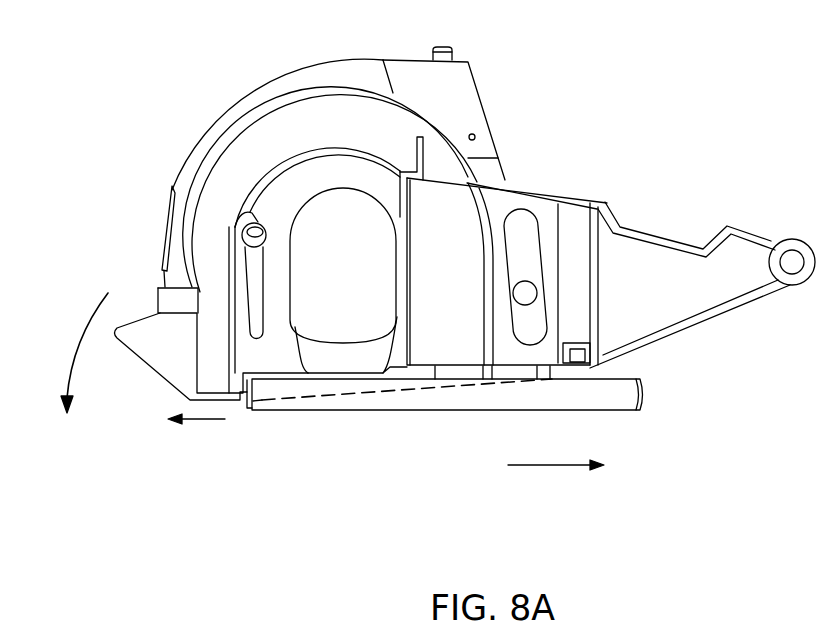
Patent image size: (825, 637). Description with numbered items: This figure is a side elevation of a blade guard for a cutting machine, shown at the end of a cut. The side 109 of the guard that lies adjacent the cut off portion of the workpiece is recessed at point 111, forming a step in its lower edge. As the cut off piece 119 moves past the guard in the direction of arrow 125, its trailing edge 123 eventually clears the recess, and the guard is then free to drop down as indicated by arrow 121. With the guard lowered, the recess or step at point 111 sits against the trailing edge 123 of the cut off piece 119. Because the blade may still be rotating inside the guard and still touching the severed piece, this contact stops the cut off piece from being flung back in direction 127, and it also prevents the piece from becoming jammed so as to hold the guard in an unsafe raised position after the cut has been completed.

The side of the guard 109 is at (247, 357).
The recess point 111 is at (258, 390).
The cut off piece 119 is at (452, 400).
The guard drop arrow 121 is at (76, 350).
The trailing edge 123 is at (252, 408).
The workpiece travel direction arrow 125 is at (543, 466).
The kick back direction 127 is at (198, 422).